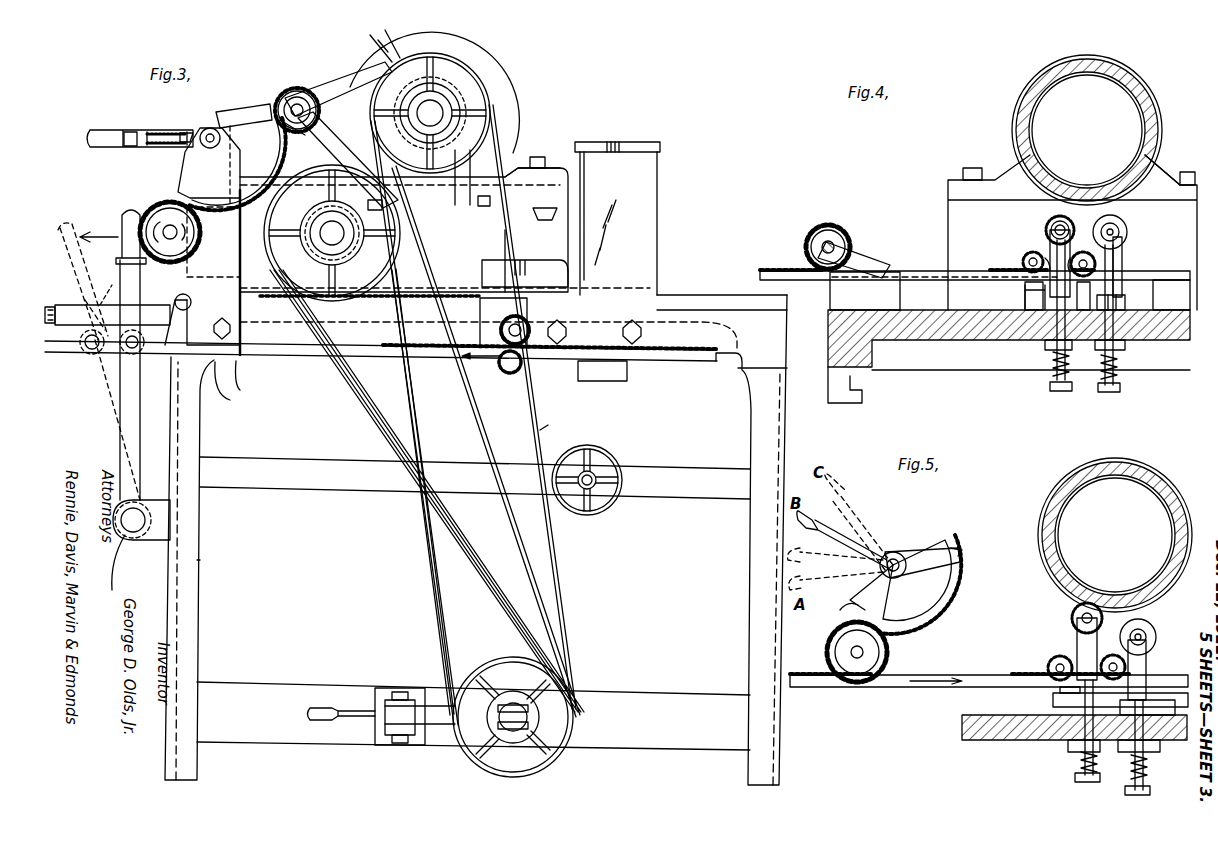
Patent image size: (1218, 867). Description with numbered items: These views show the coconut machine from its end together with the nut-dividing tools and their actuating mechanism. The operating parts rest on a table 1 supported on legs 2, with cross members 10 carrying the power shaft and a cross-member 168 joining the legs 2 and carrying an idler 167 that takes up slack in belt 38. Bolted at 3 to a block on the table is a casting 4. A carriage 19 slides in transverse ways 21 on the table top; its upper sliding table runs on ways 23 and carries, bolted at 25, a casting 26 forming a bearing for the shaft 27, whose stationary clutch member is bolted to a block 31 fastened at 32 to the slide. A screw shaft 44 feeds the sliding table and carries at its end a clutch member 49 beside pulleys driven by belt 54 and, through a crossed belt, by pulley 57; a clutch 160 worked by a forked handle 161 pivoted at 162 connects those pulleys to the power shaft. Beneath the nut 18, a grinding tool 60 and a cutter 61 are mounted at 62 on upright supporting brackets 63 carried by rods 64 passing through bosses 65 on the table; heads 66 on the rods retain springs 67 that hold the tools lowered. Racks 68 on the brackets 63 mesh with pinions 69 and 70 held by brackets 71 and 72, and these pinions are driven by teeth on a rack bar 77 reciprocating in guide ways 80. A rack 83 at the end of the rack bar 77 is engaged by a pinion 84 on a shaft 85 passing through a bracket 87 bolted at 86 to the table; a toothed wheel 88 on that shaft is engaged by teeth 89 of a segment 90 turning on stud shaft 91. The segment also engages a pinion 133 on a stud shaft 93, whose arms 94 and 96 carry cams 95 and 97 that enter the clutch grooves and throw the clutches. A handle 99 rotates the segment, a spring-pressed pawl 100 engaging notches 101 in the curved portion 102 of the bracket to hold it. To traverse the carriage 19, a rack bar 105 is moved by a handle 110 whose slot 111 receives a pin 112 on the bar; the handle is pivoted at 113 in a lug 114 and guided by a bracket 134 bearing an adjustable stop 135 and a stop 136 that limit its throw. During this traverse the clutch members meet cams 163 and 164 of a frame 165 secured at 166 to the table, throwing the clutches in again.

In FIG. 4, the table 1 is at (935, 335).
In FIG. 5, the table 1 is at (1005, 742).
In FIG. 3, the legs 2 is at (200, 604).
In FIG. 4, the bolting point 3 is at (975, 168).
In FIG. 4, the casting 4 is at (1160, 168).
In FIG. 3, the cross members 10 is at (665, 680).
In FIG. 4, the nut 18 is at (1150, 110).
In FIG. 5, the nut 18 is at (1168, 498).
In FIG. 3, the carriage 19 is at (488, 250).
In FIG. 3, the ways 21 is at (702, 296).
In FIG. 3, the ways 23 is at (548, 208).
In FIG. 3, the bolting point 25 is at (539, 157).
In FIG. 3, the casting 26 is at (520, 165).
In FIG. 3, the shaft 27 is at (432, 112).
In FIG. 3, the block 31 is at (460, 98).
In FIG. 3, the bolting point 32 is at (492, 200).
In FIG. 3, the belt 38 is at (548, 425).
In FIG. 3, the screw shaft 44 is at (325, 235).
In FIG. 3, the clutch member 49 is at (348, 256).
In FIG. 3, the belt 54 is at (365, 520).
In FIG. 3, the pulley 57 is at (555, 765).
In FIG. 4, the grinding tool 60 is at (1048, 228).
In FIG. 5, the grinding tool 60 is at (1070, 612).
In FIG. 4, the cutter 61 is at (1118, 230).
In FIG. 5, the cutter 61 is at (1150, 633).
In FIG. 4, the mounting 62 is at (1055, 222).
In FIG. 4, the upright supporting brackets 63 is at (1055, 250).
In FIG. 5, the upright supporting brackets 63 is at (1075, 655).
In FIG. 4, the rods 64 is at (1052, 340).
In FIG. 5, the rods 64 is at (1083, 745).
In FIG. 4, the bosses 65 is at (1025, 300).
In FIG. 4, the heads 66 is at (1061, 391).
In FIG. 5, the heads 66 is at (1080, 782).
In FIG. 4, the springs 67 is at (1052, 365).
In FIG. 5, the springs 67 is at (1082, 762).
In FIG. 4, the racks 68 is at (1045, 252).
In FIG. 4, the pinion 69 is at (1022, 262).
In FIG. 5, the pinion 69 is at (1048, 666).
In FIG. 4, the pinion 70 is at (1083, 252).
In FIG. 5, the pinion 70 is at (1112, 660).
In FIG. 4, the upright supporting bracket 71 is at (1022, 290).
In FIG. 5, the upright supporting bracket 71 is at (1052, 708).
In FIG. 4, the upright supporting bracket 72 is at (1120, 300).
In FIG. 5, the upright supporting bracket 72 is at (1145, 708).
In FIG. 5, the rack bar 77 is at (897, 688).
In FIG. 4, the guide ways 80 is at (888, 272).
In FIG. 4, the rack 83 is at (772, 268).
In FIG. 4, the pinion 84 is at (832, 240).
In FIG. 5, the pinion 84 is at (888, 676).
In FIG. 3, the shaft 85 is at (165, 225).
In FIG. 4, the shaft 85 is at (835, 245).
In FIG. 3, the bolting point 86 is at (222, 340).
In FIG. 3, the bracket 87 is at (180, 160).
In FIG. 3, the toothed wheel 88 is at (140, 205).
In FIG. 5, the toothed wheel 88 is at (890, 650).
In FIG. 3, the teeth 89 is at (246, 164).
In FIG. 5, the teeth 89 is at (958, 598).
In FIG. 3, the segment 90 is at (238, 118).
In FIG. 5, the segment 90 is at (918, 560).
In FIG. 3, the stud shaft 91 is at (204, 130).
In FIG. 5, the stud shaft 91 is at (895, 571).
In FIG. 3, the stud shaft 93 is at (295, 104).
In FIG. 3, the arm 94 is at (340, 88).
In FIG. 3, the cam 95 is at (385, 60).
In FIG. 3, the arm 96 is at (320, 118).
In FIG. 3, the cam 97 is at (384, 206).
In FIG. 3, the handle 99 is at (125, 130).
In FIG. 5, the handle 99 is at (850, 530).
In FIG. 3, the spring-pressed pawl 100 is at (150, 130).
In FIG. 3, the notches 101 is at (182, 130).
In FIG. 3, the curved portion 102 is at (204, 128).
In FIG. 3, the rack bar 105 is at (368, 358).
In FIG. 3, the handle 110 is at (130, 420).
In FIG. 3, the slot 111 is at (125, 345).
In FIG. 3, the pin 112 is at (136, 350).
In FIG. 3, the pivot 113 is at (128, 560).
In FIG. 3, the lug 114 is at (148, 540).
In FIG. 3, the pinion 133 is at (280, 100).
In FIG. 3, the bracket 134 is at (102, 289).
In FIG. 3, the adjustable stop 135 is at (52, 328).
In FIG. 3, the stop 136 is at (148, 300).
In FIG. 3, the clutch 160 is at (508, 695).
In FIG. 3, the forked handle 161 is at (348, 708).
In FIG. 3, the pivot 162 is at (400, 690).
In FIG. 3, the cam 163 is at (640, 145).
In FIG. 3, the cam 164 is at (545, 252).
In FIG. 3, the frame 165 is at (648, 216).
In FIG. 3, the securing point 166 is at (630, 330).
In FIG. 3, the idler 167 is at (600, 458).
In FIG. 3, the cross-member 168 is at (663, 478).